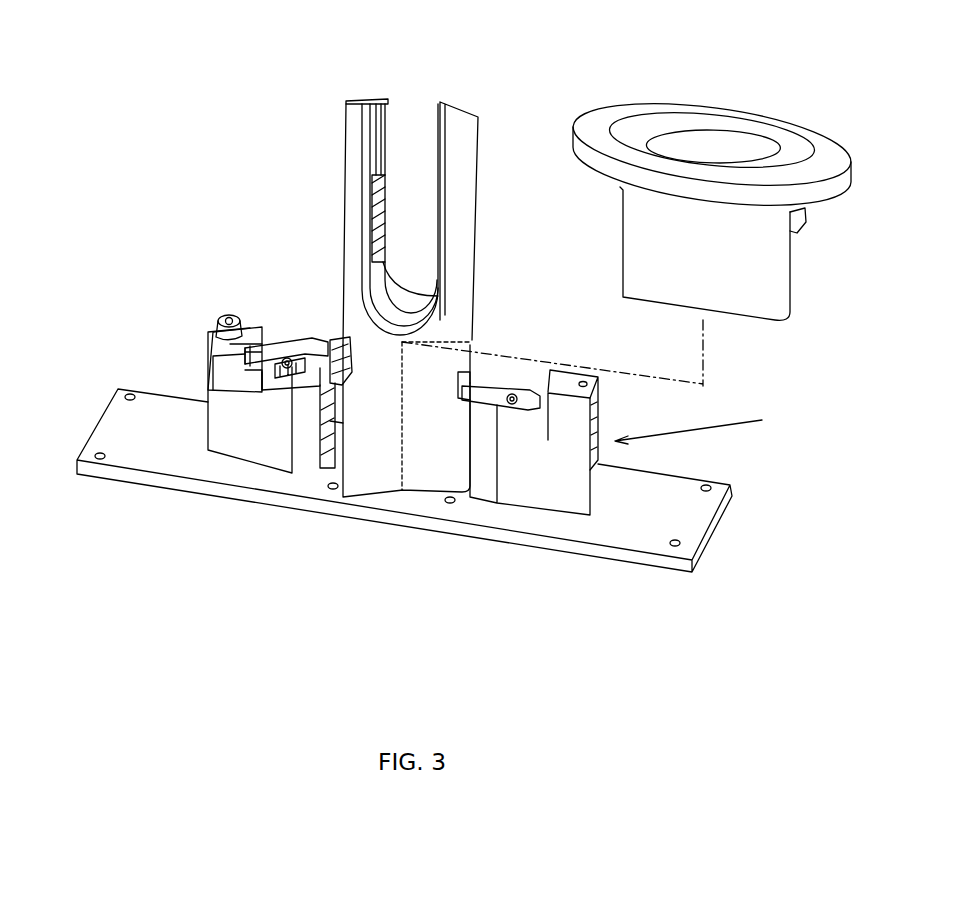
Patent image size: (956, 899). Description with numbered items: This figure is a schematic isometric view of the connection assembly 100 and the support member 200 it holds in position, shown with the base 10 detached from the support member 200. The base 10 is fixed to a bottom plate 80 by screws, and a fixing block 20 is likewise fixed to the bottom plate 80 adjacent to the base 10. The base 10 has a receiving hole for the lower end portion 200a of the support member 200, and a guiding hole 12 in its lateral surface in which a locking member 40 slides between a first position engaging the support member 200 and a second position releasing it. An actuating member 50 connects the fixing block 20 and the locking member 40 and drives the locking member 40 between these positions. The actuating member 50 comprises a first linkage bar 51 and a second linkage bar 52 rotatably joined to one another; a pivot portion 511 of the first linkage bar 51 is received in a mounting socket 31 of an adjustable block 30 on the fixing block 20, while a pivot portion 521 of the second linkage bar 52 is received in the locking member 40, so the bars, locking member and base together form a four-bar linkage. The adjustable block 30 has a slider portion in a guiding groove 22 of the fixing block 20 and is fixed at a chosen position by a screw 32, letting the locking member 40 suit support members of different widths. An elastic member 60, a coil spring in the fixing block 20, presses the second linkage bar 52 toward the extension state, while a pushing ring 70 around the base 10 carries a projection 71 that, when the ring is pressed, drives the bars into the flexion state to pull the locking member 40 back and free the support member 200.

The base 10 is at (723, 273).
The guiding hole 12 is at (803, 217).
The fixing block 20 is at (248, 430).
The guiding groove 22 is at (243, 373).
The adjustable block 30 is at (237, 337).
The mounting socket 31 is at (247, 353).
The screw 32 is at (217, 320).
The locking member 40 is at (340, 372).
The actuating member 50 is at (295, 345).
The first linkage bar 51 is at (257, 345).
The pivot portion 511 is at (218, 326).
The second linkage bar 52 is at (318, 342).
The pivot portion 521 is at (295, 370).
The elastic member 60 is at (288, 362).
The pushing ring 70 is at (686, 125).
The projection 71 is at (826, 135).
The bottom plate 80 is at (128, 437).
The connection assembly 100 is at (707, 425).
The support member 200 is at (462, 91).
The lower end portion 200a is at (390, 477).